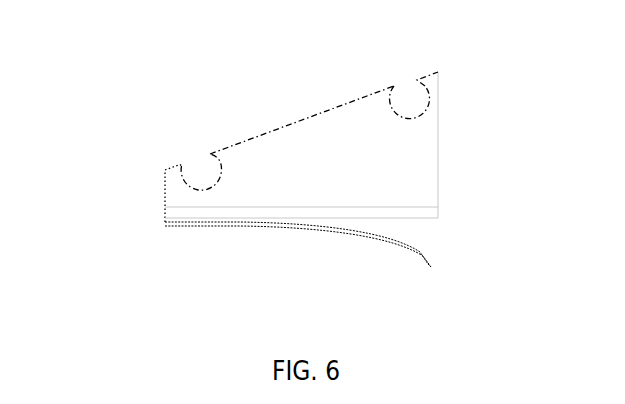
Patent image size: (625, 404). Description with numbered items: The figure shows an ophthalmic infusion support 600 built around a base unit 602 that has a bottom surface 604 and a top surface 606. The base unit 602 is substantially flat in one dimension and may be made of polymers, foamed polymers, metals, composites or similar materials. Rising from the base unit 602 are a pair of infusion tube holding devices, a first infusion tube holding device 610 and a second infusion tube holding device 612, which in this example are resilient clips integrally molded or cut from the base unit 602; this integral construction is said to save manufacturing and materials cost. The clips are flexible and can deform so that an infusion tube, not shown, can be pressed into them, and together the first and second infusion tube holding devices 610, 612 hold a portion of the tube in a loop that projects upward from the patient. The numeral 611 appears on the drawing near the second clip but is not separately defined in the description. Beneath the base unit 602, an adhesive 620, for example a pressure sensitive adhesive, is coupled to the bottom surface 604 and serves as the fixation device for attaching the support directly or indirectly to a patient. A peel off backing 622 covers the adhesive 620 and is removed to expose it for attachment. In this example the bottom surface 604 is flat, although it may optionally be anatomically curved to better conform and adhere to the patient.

The ophthalmic infusion support 600 is at (128, 271).
The base unit 602 is at (197, 193).
The bottom surface 604 is at (198, 207).
The top surface 606 is at (290, 125).
The first infusion tube holding device 610 is at (415, 98).
The second coil 611 is at (392, 85).
The second infusion tube holding device 612 is at (201, 167).
The adhesive 620 is at (423, 212).
The peel off backing 622 is at (435, 266).